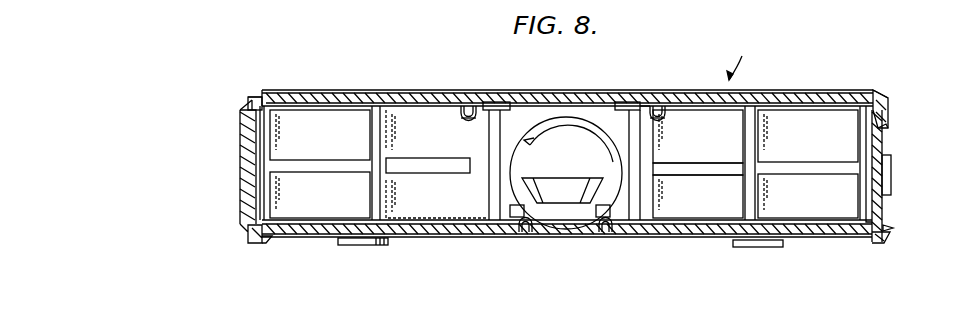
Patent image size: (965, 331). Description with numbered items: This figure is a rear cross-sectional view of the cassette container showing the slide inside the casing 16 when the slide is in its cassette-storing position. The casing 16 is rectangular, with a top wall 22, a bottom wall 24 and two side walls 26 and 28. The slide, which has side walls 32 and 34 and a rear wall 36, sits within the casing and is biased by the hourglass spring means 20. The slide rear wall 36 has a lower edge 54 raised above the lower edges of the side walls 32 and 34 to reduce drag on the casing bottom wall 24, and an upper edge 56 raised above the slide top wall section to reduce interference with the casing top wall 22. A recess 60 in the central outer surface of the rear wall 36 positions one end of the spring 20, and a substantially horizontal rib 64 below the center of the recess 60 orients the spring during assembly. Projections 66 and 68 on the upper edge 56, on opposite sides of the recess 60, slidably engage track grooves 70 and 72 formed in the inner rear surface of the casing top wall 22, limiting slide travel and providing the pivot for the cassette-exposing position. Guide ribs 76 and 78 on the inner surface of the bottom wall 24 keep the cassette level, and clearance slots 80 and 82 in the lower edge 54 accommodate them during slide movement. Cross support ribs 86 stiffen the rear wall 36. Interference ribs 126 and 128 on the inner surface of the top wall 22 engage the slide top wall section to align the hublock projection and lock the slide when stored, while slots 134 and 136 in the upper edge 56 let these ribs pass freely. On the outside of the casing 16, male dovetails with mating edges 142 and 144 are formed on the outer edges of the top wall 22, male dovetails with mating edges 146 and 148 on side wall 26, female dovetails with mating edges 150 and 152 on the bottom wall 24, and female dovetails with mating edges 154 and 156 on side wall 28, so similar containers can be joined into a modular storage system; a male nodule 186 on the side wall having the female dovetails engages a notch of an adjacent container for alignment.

The casing 16 is at (744, 60).
The spring means 20 is at (511, 180).
The top wall 22 is at (371, 91).
The bottom wall 24 is at (676, 233).
The side wall 26 is at (250, 103).
The side wall 28 is at (888, 102).
The side wall 32 is at (262, 164).
The side wall 34 is at (876, 142).
The rear wall 36 is at (803, 208).
The lower edge 54 is at (318, 217).
The upper edge 56 is at (776, 118).
The recess 60 is at (612, 125).
The horizontal rib 64 is at (567, 198).
The projection 66 is at (500, 100).
The projection 68 is at (648, 100).
The track groove 70 is at (515, 100).
The track groove 72 is at (645, 98).
The guide rib 76 is at (522, 233).
The guide rib 78 is at (608, 233).
The clearance slot 80 is at (510, 212).
The clearance slot 82 is at (610, 210).
The cross support ribs 86 is at (340, 160).
The interference rib 126 is at (468, 104).
The interference rib 128 is at (666, 118).
The slot 134 is at (470, 121).
The slot 136 is at (656, 122).
The mating edge 142 is at (256, 97).
The mating edge 144 is at (878, 98).
The mating edge 146 is at (248, 110).
The mating edge 148 is at (250, 232).
The mating edge 150 is at (265, 244).
The mating edge 152 is at (880, 243).
The mating edge 154 is at (890, 122).
The mating edge 156 is at (893, 228).
The male nodule 186 is at (891, 180).